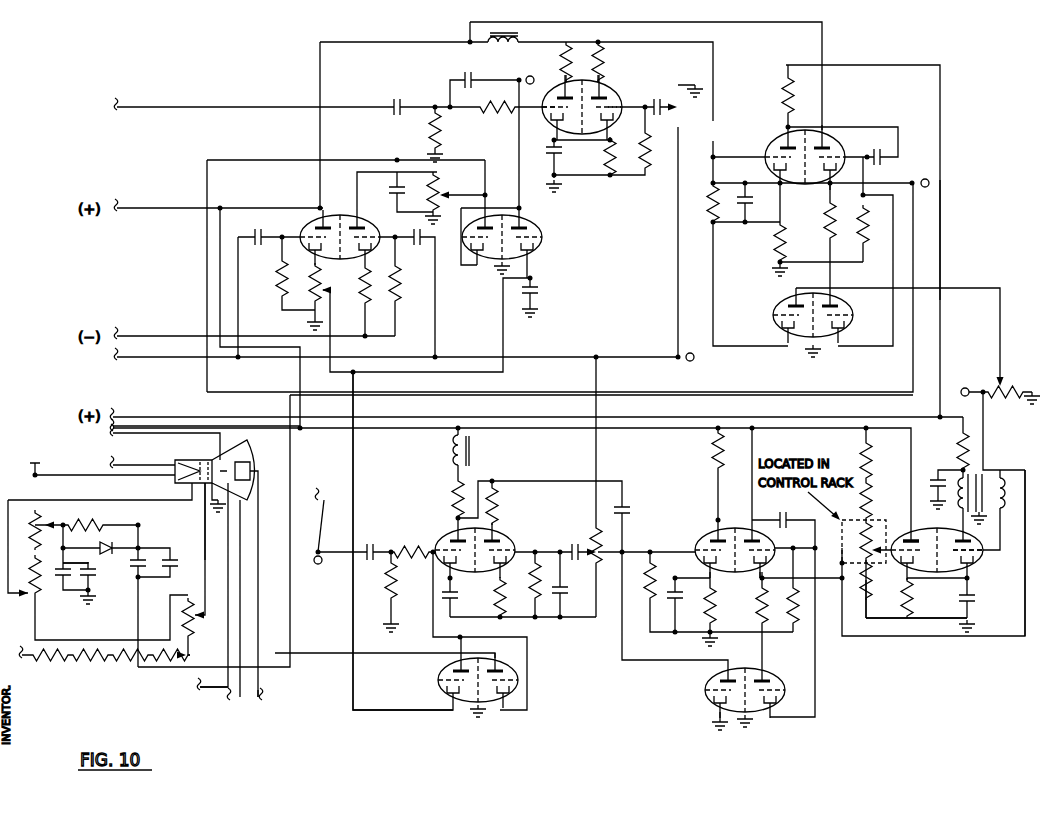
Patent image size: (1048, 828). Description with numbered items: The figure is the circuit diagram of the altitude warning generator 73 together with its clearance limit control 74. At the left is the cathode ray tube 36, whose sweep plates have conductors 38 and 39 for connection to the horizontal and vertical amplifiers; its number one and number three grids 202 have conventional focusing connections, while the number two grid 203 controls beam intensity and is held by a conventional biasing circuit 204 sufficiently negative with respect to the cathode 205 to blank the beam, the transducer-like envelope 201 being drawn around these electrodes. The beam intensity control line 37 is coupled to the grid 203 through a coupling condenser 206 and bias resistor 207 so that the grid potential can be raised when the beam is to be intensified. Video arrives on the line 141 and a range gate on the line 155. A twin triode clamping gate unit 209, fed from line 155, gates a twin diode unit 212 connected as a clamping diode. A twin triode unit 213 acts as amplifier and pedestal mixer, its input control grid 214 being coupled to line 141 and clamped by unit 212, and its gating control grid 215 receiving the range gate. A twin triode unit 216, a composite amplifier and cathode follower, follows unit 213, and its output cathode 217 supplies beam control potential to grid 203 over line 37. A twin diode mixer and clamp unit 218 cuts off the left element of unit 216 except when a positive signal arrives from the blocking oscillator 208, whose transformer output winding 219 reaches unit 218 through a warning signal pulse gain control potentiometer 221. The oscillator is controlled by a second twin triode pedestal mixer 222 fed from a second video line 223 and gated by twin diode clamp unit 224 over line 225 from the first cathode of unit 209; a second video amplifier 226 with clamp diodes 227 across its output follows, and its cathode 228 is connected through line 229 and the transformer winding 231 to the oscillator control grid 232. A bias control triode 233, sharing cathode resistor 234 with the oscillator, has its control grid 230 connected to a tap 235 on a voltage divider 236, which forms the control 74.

The line 141 is at (222, 107).
The line 155 is at (165, 357).
The twin triode clamping gate unit 209 is at (346, 224).
The twin diode unit 212 is at (546, 222).
The twin triode unit 213 is at (616, 82).
The input control grid 214 is at (556, 116).
The gating control grid 215 is at (624, 101).
The twin triode unit 216 is at (812, 140).
The output cathode 217 is at (816, 190).
The twin diode mixer and clamp unit 218 is at (840, 318).
The warning signal pulse gain control potentiometer 221 is at (1003, 383).
The transformer output winding 219 is at (990, 470).
The altitude warning generator 73 is at (958, 200).
The control 74 is at (873, 516).
The cathode ray tube 36 is at (258, 456).
The beam intensity control line 37 is at (291, 578).
The conductor 38 is at (140, 431).
The conductor 39 is at (262, 697).
The transducer housing 201 is at (200, 465).
The number 1 and number 3 grids 202 is at (211, 468).
The number 2 grid 203 is at (206, 500).
The biasing circuit 204 is at (140, 588).
The cathode 205 is at (192, 480).
The coupling condenser 206 is at (150, 560).
The bias resistor 207 is at (100, 525).
The second twin triode unit 222 is at (523, 535).
The second video line 223 is at (322, 497).
The twin diode unit 224 is at (505, 678).
The line 225 is at (356, 497).
The second video amplifier unit 226 is at (669, 519).
The twin diode unit 227 is at (770, 688).
The cathode 228 is at (762, 567).
The line 229 is at (1000, 638).
The control grid 230 is at (911, 605).
The blocking oscillator transformer winding 231 is at (1027, 500).
The blocking oscillator control grid 232 is at (968, 540).
The bias control triode 233 is at (912, 528).
The cathode resistor 234 is at (900, 590).
The tap 235 is at (872, 580).
The voltage divider 236 is at (862, 603).
The blocking oscillator 208 is at (982, 562).